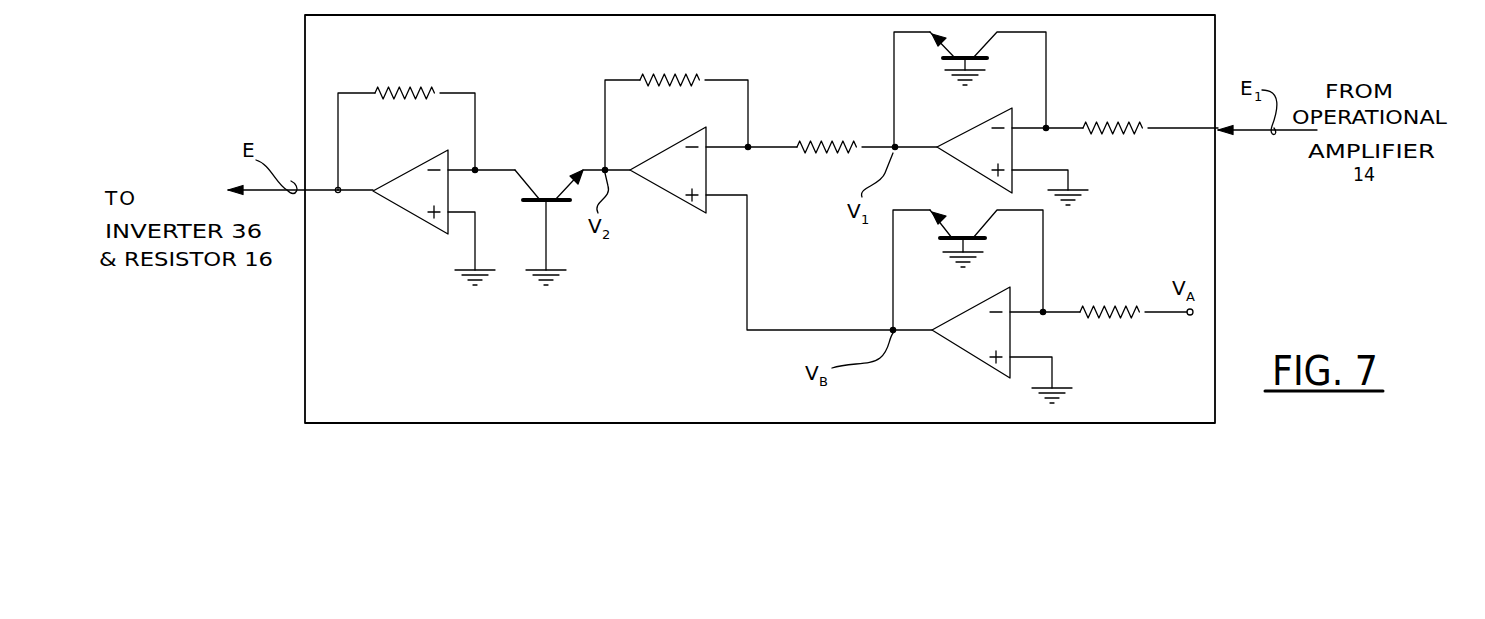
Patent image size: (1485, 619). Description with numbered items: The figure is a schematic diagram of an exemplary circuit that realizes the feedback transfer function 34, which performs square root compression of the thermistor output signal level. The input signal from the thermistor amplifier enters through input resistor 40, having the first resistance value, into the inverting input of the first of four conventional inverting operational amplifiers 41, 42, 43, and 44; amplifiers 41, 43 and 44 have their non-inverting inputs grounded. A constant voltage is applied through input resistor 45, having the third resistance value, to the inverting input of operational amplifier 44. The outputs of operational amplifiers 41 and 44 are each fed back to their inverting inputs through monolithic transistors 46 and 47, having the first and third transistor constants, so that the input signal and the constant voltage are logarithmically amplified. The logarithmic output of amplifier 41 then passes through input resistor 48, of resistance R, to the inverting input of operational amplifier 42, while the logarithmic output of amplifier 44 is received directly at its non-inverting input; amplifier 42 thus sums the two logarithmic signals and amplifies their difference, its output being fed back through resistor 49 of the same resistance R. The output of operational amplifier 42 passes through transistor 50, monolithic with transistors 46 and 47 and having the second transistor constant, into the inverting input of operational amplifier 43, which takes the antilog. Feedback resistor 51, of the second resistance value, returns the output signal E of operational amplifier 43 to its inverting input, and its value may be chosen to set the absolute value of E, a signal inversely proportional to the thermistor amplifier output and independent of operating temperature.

The feedback transfer function 34 is at (1215, 218).
The input resistor 40 is at (1115, 135).
The operational amplifier 41 is at (965, 165).
The operational amplifier 42 is at (661, 189).
The operational amplifier 43 is at (410, 213).
The operational amplifier 44 is at (960, 348).
The input resistor 45 is at (1110, 319).
The monolithic transistor 46 is at (988, 58).
The monolithic transistor 47 is at (948, 241).
The input resistor 48 is at (818, 154).
The feedback resistor 49 is at (670, 87).
The monolithic transistor 50 is at (536, 203).
The feedback resistor 51 is at (405, 99).